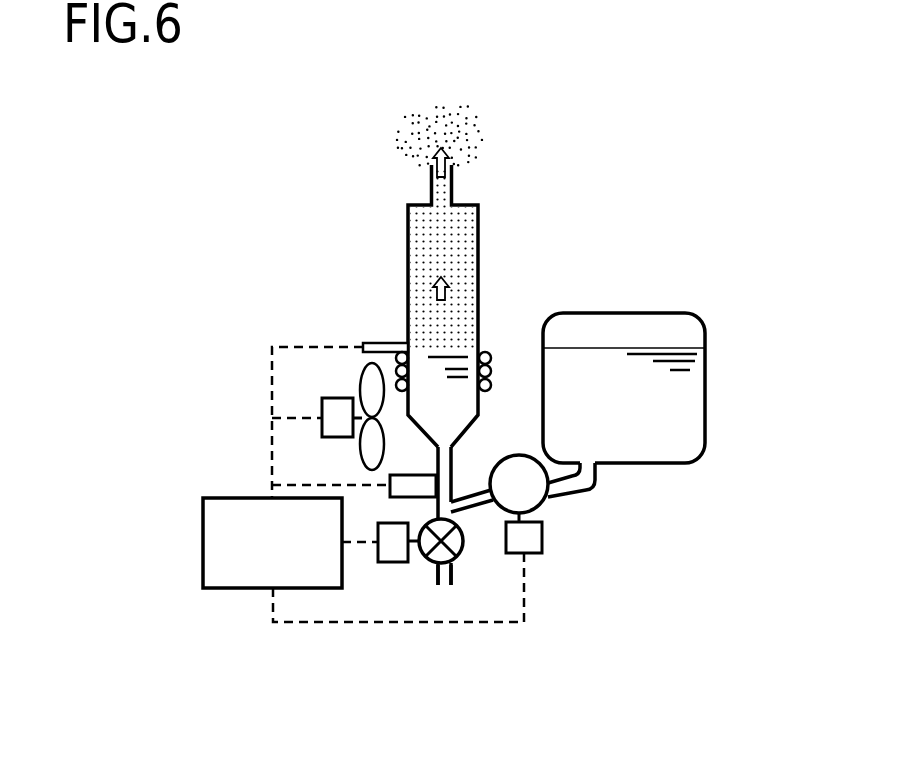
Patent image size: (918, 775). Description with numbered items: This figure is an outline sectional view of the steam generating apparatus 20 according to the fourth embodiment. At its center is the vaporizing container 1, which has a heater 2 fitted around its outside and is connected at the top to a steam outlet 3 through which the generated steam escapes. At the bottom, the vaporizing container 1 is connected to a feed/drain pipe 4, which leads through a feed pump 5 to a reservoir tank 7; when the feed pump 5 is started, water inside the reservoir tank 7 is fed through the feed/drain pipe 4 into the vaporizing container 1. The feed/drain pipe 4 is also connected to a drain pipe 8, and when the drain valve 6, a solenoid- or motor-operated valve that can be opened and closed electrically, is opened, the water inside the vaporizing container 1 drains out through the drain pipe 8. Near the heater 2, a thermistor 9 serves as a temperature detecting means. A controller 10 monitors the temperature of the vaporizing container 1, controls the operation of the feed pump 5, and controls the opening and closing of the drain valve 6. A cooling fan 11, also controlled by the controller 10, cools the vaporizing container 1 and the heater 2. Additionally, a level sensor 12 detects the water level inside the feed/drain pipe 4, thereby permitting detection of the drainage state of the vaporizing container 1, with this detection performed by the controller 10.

The steam generating apparatus 20 is at (343, 225).
The vaporizing container 1 is at (480, 268).
The heater 2 is at (493, 372).
The steam outlet 3 is at (452, 190).
The feed/drain pipe 4 is at (438, 465).
The feed pump 5 is at (535, 500).
The drain valve 6 is at (455, 545).
The reservoir tank 7 is at (707, 388).
The drain pipe 8 is at (448, 577).
The thermistor 9 is at (388, 343).
The controller 10 is at (203, 527).
The cooling fan 11 is at (368, 382).
The level sensor 12 is at (390, 485).